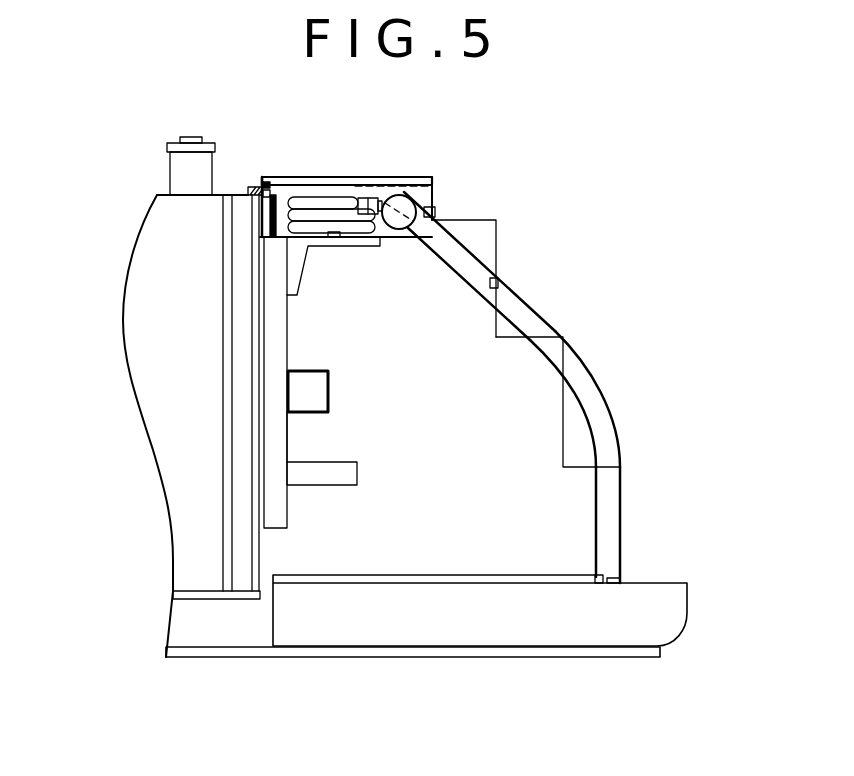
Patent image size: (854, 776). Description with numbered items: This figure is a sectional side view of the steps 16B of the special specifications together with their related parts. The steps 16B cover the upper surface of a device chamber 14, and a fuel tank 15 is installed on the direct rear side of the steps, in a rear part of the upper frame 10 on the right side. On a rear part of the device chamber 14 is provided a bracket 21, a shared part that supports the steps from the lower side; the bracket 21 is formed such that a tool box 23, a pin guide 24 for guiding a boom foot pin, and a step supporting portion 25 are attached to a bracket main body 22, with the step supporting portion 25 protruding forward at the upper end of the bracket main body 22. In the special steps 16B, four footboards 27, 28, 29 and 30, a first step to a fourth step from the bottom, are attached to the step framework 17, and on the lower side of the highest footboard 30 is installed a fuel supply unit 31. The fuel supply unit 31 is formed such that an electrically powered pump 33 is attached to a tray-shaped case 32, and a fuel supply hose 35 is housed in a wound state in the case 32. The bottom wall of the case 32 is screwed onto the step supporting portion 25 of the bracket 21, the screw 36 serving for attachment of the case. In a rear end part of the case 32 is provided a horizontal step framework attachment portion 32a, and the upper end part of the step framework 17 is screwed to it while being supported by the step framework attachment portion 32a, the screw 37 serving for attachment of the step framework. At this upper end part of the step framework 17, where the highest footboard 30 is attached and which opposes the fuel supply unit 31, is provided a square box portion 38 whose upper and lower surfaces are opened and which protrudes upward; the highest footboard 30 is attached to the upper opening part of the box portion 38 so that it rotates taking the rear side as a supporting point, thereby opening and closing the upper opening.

The upper frame 10 is at (427, 660).
The device chamber 14 is at (477, 464).
The fuel tank 15 is at (145, 273).
The steps of special specifications 16B is at (527, 287).
The step framework 17 is at (594, 380).
The bracket 21 is at (287, 355).
The bracket main body 22 is at (288, 433).
The tool box 23 is at (322, 487).
The pin guide 24 is at (329, 393).
The step supporting portion 25 is at (365, 247).
The footboard 27 is at (604, 466).
The footboard 28 is at (538, 334).
The footboard 29 is at (484, 218).
The highest footboard 30 is at (325, 177).
The fuel supply unit 31 is at (386, 200).
The case 32 is at (397, 240).
The step framework attachment portion 32a is at (258, 187).
The pump 33 is at (405, 193).
The fuel supply hose 35 is at (345, 205).
The screw 36 is at (334, 240).
The screw 37 is at (268, 184).
The box portion 38 is at (430, 197).